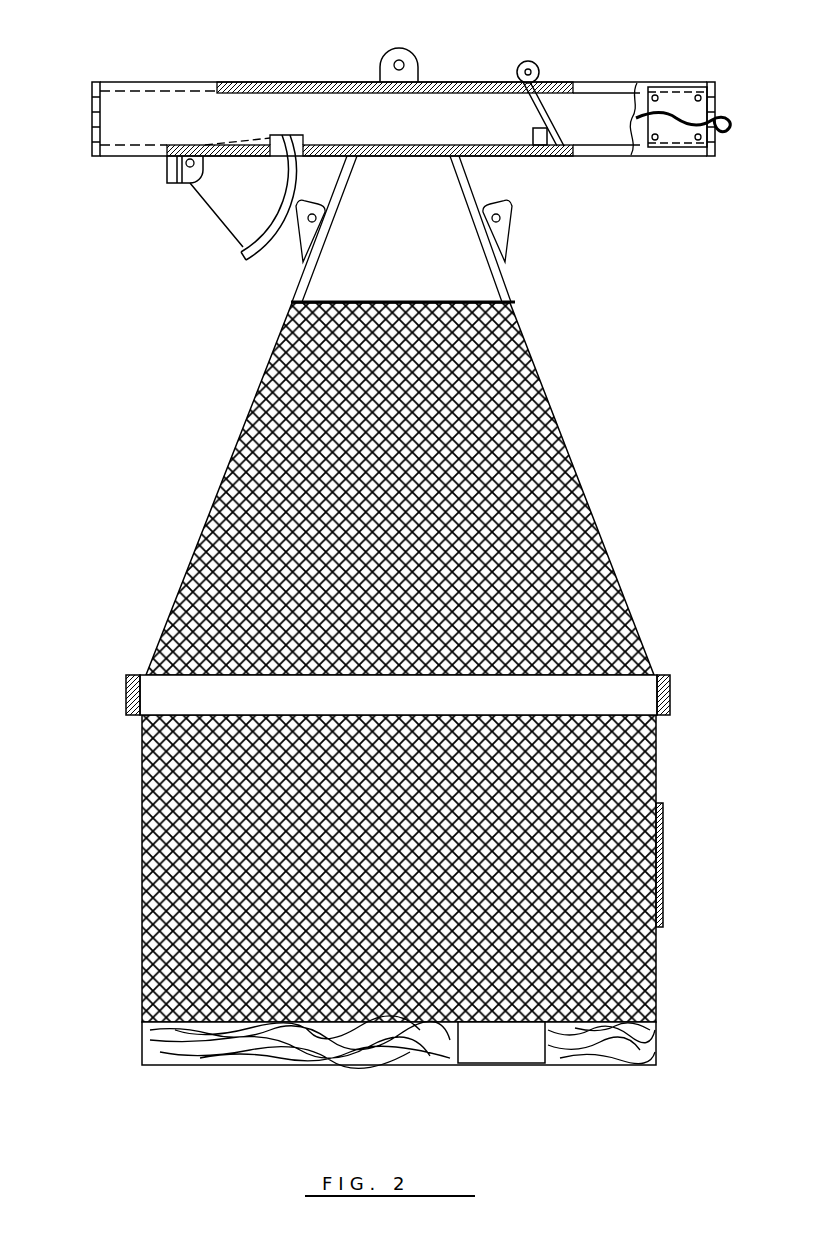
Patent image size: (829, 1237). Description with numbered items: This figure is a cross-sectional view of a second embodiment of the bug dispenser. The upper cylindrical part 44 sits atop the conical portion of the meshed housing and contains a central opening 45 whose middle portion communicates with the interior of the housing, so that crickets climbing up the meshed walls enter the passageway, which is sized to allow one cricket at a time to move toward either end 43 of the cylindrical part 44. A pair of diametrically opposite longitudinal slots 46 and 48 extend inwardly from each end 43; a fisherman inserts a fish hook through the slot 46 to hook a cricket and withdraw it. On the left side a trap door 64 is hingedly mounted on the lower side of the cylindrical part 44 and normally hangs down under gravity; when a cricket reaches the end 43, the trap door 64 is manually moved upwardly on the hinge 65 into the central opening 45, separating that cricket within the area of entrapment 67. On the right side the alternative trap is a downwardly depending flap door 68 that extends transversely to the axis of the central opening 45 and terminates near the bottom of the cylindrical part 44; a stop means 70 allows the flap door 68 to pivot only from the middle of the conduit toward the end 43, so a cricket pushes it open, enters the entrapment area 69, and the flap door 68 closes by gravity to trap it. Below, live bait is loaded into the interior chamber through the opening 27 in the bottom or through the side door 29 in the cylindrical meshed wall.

The opening 27 is at (510, 1046).
The side door 29 is at (664, 860).
The end 43 is at (100, 82).
The cylindrical part 44 is at (450, 82).
The central opening 45 is at (393, 124).
The longitudinal slot 46 is at (167, 82).
The longitudinal slot 48 is at (130, 156).
The trap door 64 is at (241, 212).
The hinge 65 is at (189, 168).
The area of entrapment 67 is at (155, 124).
The flap door 68 is at (560, 123).
The entrapment area 69 is at (610, 124).
The stop means 70 is at (533, 136).